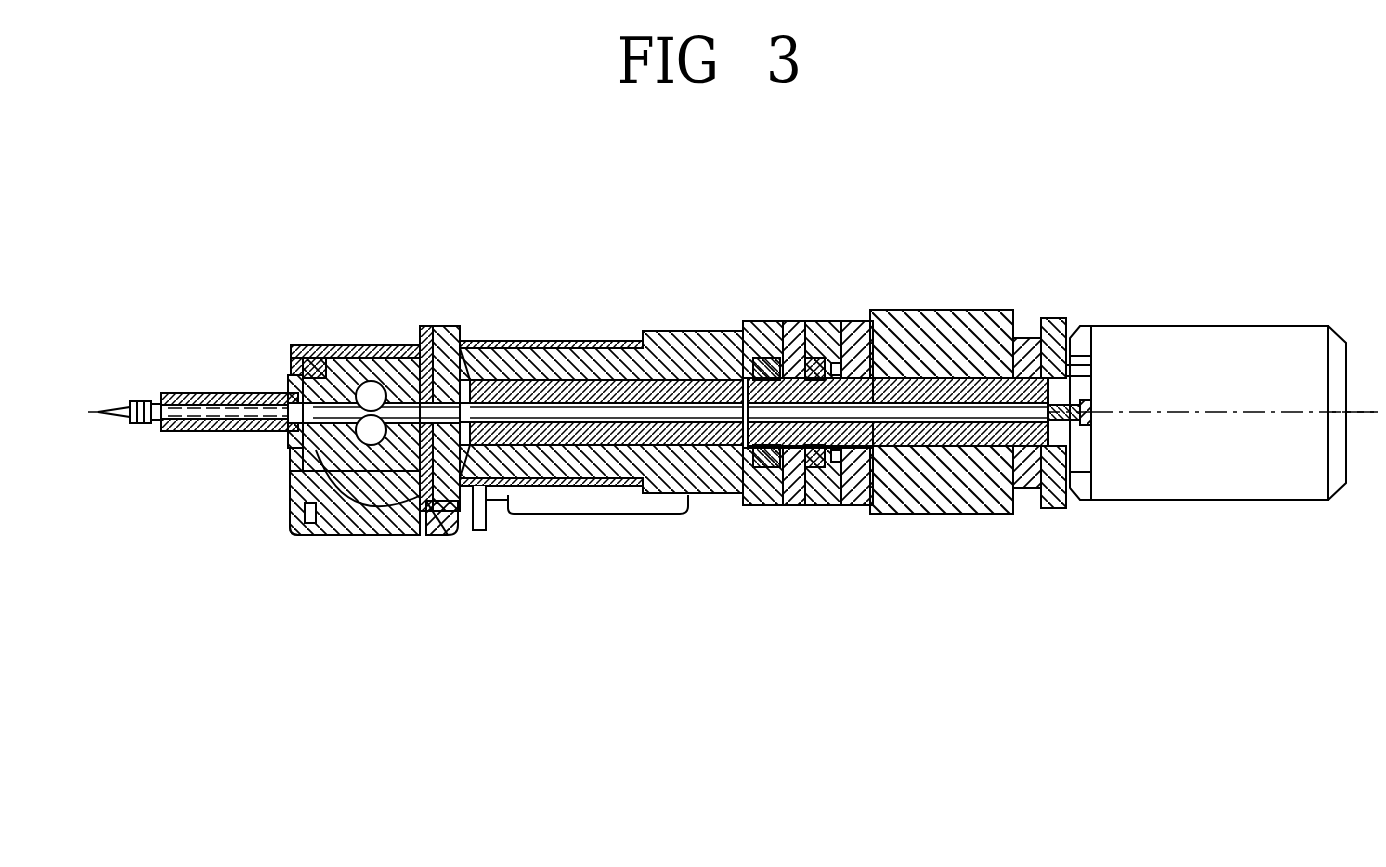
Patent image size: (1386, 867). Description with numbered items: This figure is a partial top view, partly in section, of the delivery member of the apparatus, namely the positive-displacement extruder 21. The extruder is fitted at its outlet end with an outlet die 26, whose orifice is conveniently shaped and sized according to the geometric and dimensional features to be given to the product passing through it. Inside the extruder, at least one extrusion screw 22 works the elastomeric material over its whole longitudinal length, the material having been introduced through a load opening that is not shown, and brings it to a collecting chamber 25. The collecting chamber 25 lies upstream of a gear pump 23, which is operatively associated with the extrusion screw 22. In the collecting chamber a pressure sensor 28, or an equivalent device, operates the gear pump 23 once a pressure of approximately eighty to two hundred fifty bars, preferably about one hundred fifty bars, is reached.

The positive-displacement extruder 21 is at (1040, 260).
The extrusion screw 22 is at (573, 332).
The gear pump 23 is at (348, 336).
The collecting chamber 25 is at (421, 320).
The outlet die 26 is at (100, 397).
The pressure sensor 28 is at (415, 512).